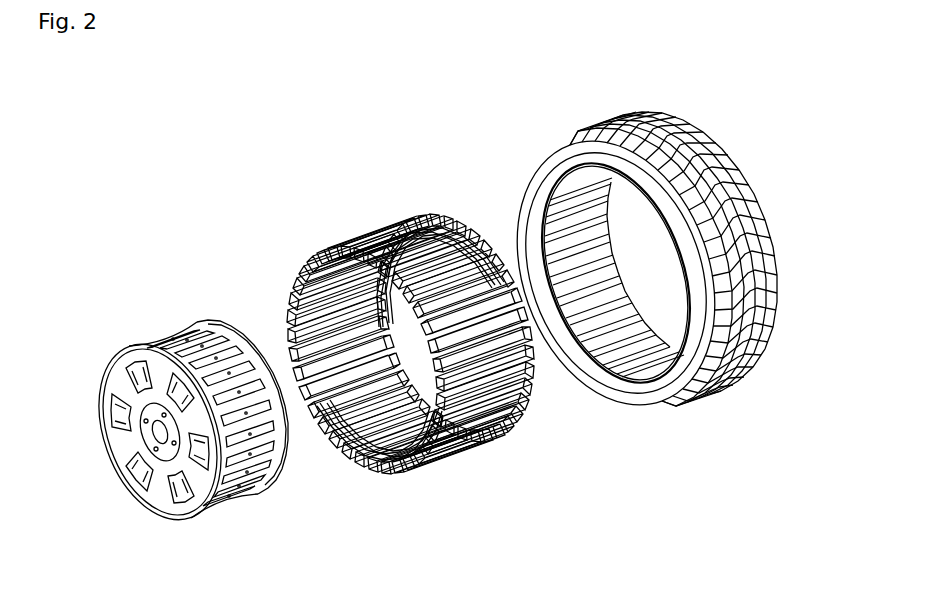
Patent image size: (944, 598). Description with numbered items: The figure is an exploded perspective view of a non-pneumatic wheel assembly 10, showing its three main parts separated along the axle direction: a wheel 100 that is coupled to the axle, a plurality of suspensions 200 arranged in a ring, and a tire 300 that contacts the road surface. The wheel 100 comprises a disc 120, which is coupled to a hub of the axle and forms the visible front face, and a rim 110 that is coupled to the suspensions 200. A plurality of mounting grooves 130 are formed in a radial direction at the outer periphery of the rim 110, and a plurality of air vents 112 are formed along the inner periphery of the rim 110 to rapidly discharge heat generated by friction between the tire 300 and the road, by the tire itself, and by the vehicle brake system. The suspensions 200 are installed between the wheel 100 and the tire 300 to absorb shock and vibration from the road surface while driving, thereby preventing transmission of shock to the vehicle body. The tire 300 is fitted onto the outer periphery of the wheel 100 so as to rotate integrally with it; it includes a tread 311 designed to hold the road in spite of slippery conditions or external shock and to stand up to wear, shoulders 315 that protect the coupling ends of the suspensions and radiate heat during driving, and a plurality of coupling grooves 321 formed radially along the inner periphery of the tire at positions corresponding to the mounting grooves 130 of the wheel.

The non-pneumatic wheel assembly 10 is at (472, 583).
The wheel 100 is at (114, 340).
The rim 110 is at (283, 470).
The air vents 112 is at (192, 330).
The disc 120 is at (115, 452).
The mounting grooves 130 is at (247, 490).
The suspensions 200 is at (356, 200).
The tire 300 is at (708, 121).
The tread 311 is at (702, 387).
The shoulders 315 is at (525, 197).
The coupling grooves 321 is at (580, 357).